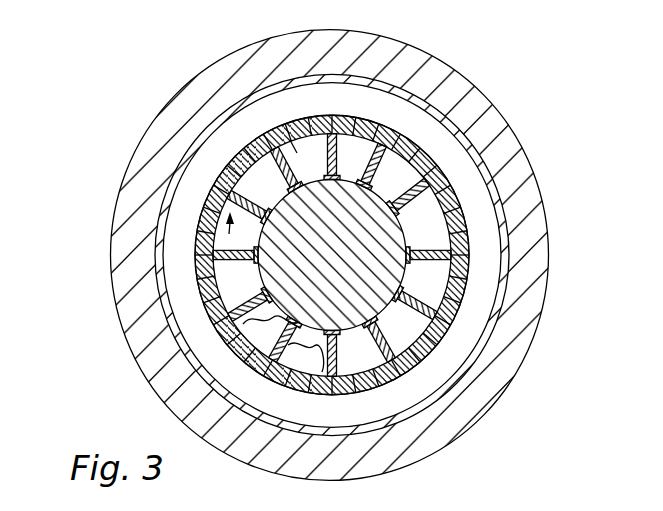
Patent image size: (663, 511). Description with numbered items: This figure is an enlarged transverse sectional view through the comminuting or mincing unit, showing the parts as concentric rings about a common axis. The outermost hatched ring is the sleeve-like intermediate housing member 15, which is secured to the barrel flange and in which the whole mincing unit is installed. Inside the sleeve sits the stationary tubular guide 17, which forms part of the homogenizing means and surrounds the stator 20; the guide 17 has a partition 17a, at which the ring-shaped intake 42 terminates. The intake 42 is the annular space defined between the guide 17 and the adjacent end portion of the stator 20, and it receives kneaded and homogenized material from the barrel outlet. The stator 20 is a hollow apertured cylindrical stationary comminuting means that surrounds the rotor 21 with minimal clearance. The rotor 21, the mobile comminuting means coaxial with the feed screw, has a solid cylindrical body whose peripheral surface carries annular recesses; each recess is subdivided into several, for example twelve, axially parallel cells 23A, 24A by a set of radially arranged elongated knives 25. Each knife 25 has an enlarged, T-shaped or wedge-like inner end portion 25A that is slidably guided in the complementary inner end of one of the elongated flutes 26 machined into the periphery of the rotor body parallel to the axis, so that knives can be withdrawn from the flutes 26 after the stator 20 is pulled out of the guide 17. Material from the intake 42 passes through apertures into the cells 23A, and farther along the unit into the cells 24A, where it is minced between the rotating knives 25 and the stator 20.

The intermediate housing member 15 is at (441, 88).
The tubular guide 17 is at (463, 123).
The partition 17a is at (390, 403).
The stator 20 is at (460, 302).
The rotor 21 is at (410, 289).
The cells 23A is at (227, 240).
The cells 24A is at (258, 338).
The knives 25 is at (481, 218).
The inner end portion of knife 25A is at (393, 255).
The flutes 26 is at (400, 215).
The intake 42 is at (442, 366).